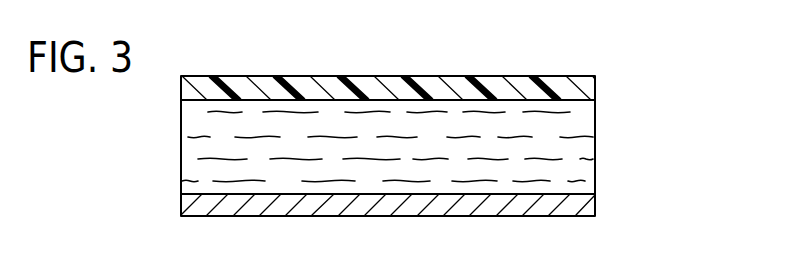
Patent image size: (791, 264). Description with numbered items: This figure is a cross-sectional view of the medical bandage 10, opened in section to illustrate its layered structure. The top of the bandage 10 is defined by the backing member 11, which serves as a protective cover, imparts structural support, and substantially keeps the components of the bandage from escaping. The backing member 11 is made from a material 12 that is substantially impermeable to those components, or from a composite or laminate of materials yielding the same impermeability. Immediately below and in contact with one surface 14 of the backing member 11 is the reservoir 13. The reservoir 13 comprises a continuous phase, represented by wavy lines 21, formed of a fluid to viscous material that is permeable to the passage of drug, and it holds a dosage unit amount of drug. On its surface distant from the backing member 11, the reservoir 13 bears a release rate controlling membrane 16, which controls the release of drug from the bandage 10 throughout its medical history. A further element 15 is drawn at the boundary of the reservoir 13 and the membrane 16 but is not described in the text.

The laminated sheet product 10 is at (156, 140).
The top surface layer 11 is at (555, 82).
The reinforcing strips in top layer 12 is at (493, 77).
The fibrous core layer 13 is at (582, 171).
The adhesive interface between top layer and core 14 is at (590, 100).
The adhesive interface between core and bottom layer 15 is at (490, 195).
The bottom surface layer 16 is at (565, 204).
The fiber in core layer 21 is at (260, 182).